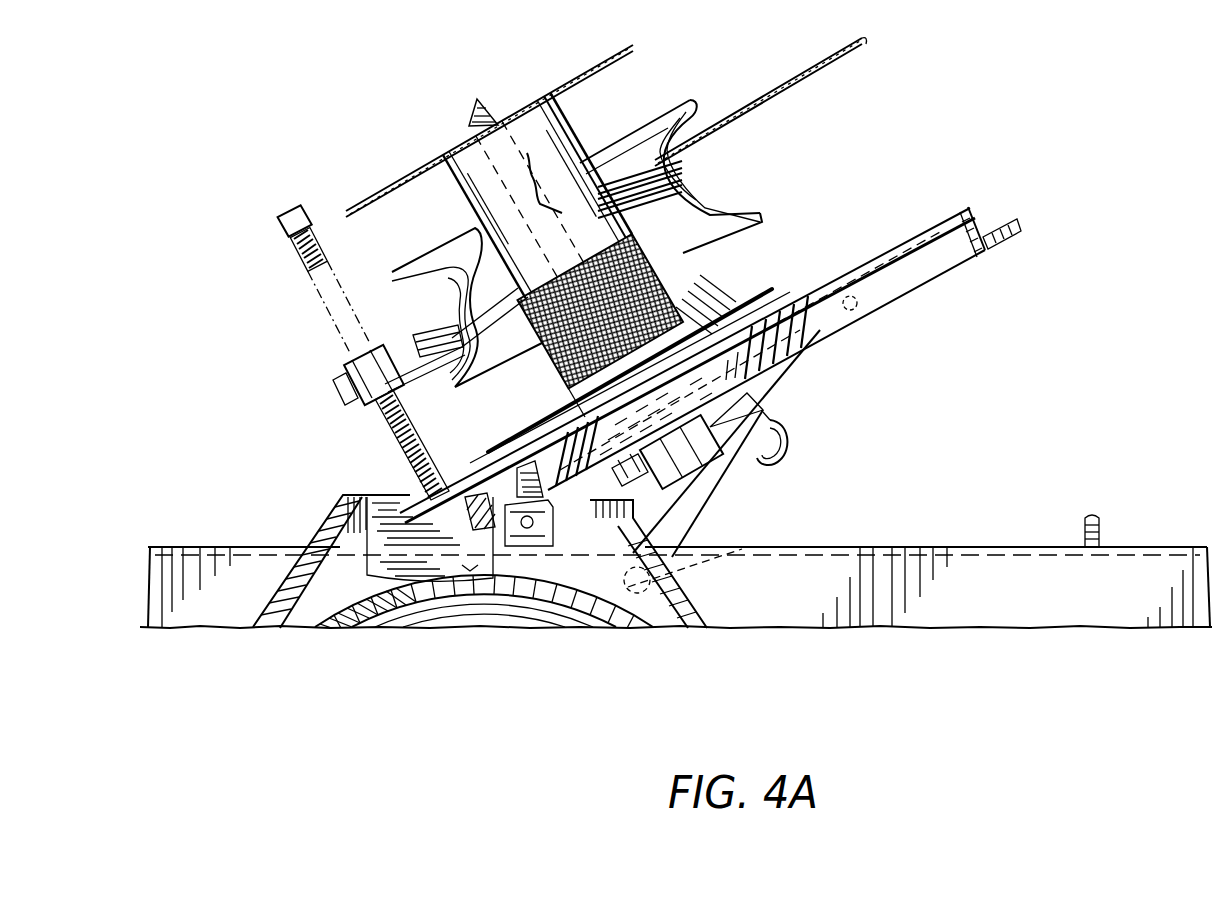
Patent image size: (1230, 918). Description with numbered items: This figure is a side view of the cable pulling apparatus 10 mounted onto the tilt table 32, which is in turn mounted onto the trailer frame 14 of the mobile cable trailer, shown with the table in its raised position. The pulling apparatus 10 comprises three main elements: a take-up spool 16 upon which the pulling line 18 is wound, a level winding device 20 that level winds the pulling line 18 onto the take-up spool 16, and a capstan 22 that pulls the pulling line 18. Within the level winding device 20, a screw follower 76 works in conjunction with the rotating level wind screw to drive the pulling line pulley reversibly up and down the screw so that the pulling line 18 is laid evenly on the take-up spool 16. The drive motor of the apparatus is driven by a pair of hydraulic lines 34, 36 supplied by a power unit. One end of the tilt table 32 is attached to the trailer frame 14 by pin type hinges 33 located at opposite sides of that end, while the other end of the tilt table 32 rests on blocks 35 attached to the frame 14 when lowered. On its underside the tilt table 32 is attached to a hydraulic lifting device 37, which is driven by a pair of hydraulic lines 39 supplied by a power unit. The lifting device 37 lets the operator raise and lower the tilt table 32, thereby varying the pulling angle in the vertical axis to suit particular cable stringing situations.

The cable pulling apparatus 10 is at (376, 152).
The trailer frame 14 is at (1030, 628).
The take-up spool 16 is at (440, 157).
The pulling line 18 is at (820, 70).
The level winding device 20 is at (290, 301).
The capstan 22 is at (666, 112).
The tilt table 32 is at (930, 227).
The pin type hinges 33 is at (500, 548).
The hydraulic line 34 is at (648, 502).
The blocks 35 is at (1092, 512).
The hydraulic line 36 is at (765, 412).
The hydraulic lifting device 37 is at (737, 557).
The hydraulic lines 39 is at (787, 453).
The screw follower 76 is at (345, 375).